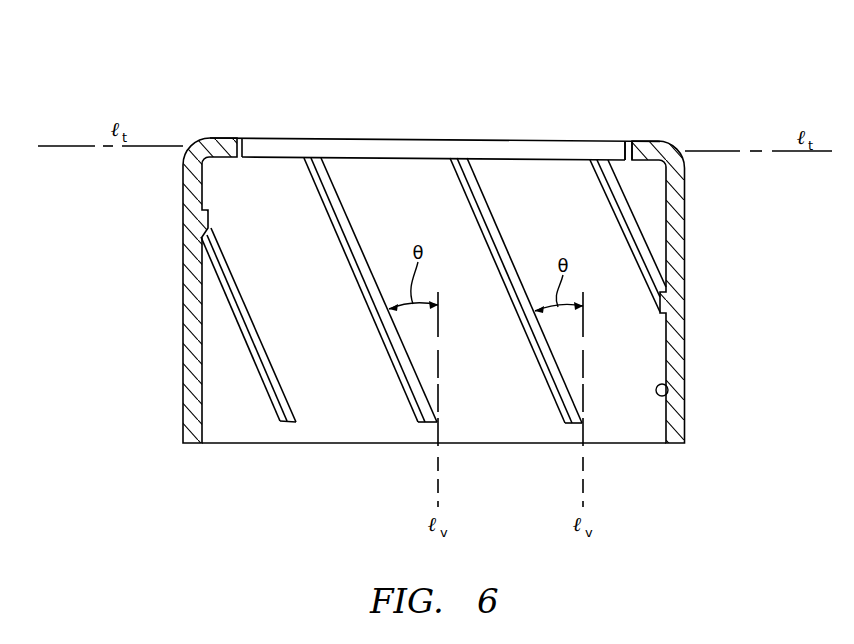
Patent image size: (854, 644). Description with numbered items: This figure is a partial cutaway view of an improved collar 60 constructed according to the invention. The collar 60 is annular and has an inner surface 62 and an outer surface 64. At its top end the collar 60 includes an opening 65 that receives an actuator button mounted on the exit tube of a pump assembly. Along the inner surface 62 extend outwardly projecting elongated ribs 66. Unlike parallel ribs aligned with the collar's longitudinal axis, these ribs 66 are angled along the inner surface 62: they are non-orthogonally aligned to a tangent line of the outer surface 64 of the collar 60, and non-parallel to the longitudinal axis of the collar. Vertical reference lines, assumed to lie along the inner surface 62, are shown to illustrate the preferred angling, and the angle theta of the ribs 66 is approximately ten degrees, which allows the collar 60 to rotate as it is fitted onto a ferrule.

The collar 60 is at (491, 233).
The inner surface 62 is at (668, 393).
The outer surface 64 is at (686, 266).
The opening 65 is at (627, 139).
The elongated ribs 66 is at (241, 291).